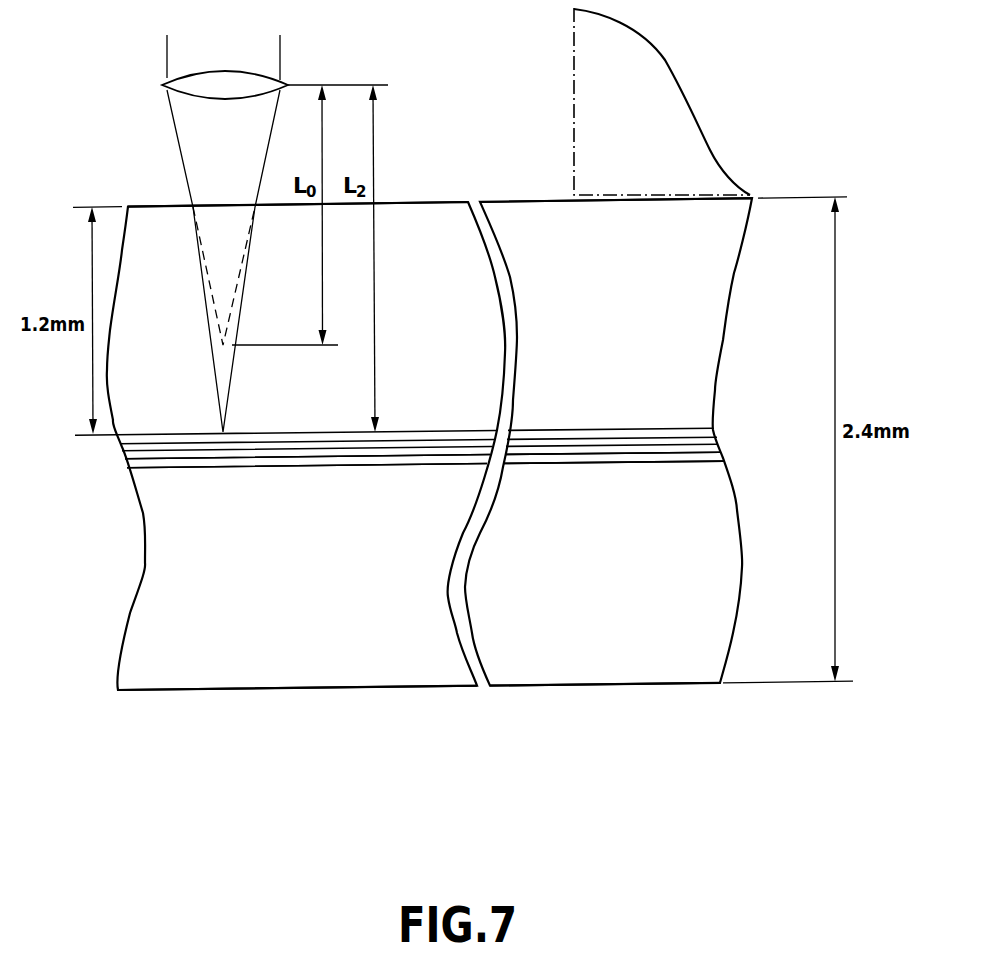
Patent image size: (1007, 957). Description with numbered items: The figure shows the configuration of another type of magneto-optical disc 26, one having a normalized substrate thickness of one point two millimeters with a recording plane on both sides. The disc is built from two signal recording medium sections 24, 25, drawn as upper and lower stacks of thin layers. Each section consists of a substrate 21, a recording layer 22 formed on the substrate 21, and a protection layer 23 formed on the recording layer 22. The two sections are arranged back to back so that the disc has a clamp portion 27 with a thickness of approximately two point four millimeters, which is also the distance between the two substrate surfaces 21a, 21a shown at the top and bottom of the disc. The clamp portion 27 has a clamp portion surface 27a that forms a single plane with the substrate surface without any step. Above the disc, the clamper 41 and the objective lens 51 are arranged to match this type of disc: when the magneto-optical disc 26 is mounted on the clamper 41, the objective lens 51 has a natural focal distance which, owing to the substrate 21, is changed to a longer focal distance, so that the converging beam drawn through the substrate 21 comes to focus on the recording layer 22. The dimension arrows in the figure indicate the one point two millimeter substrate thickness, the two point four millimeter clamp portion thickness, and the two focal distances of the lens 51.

The substrate 21 is at (700, 412).
The recording layer 22 is at (715, 432).
The protection layer 23 is at (453, 456).
The signal recording medium section 24 is at (782, 458).
The signal recording medium section 25 is at (451, 448).
The magneto-optical disc 26 is at (415, 694).
The clamp portion 27 is at (702, 271).
The substrate surface 21a is at (423, 202).
The clamp portion surface 27a is at (718, 201).
The clamper 41 is at (587, 117).
The objective lens 51 is at (162, 85).